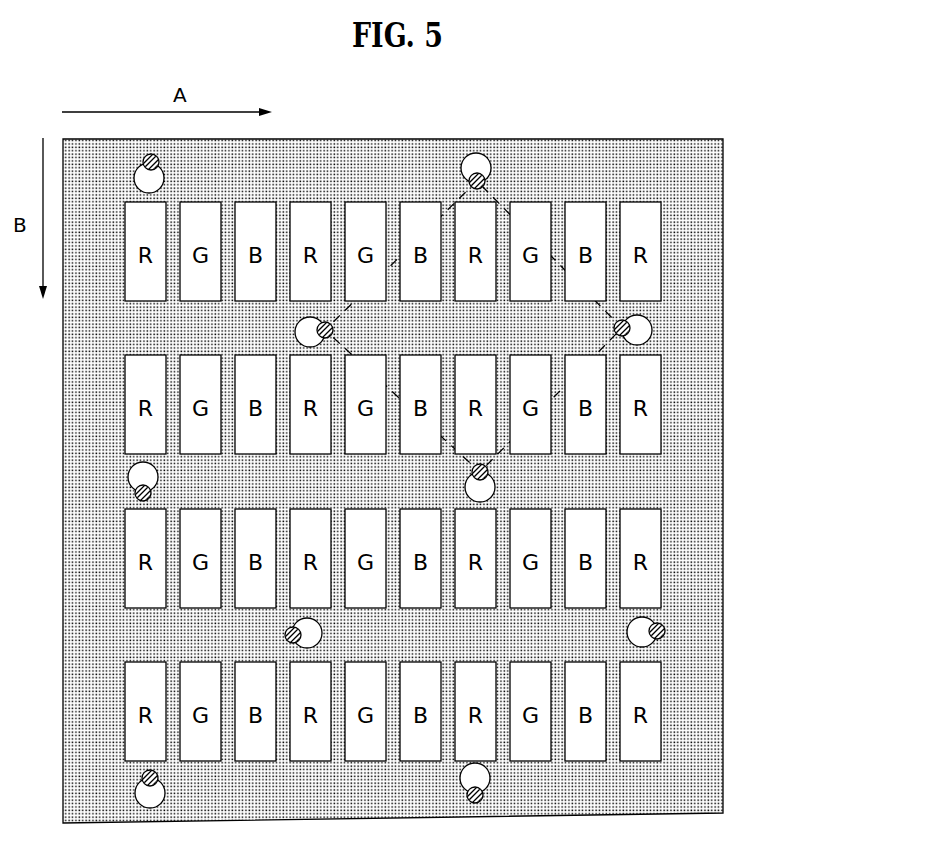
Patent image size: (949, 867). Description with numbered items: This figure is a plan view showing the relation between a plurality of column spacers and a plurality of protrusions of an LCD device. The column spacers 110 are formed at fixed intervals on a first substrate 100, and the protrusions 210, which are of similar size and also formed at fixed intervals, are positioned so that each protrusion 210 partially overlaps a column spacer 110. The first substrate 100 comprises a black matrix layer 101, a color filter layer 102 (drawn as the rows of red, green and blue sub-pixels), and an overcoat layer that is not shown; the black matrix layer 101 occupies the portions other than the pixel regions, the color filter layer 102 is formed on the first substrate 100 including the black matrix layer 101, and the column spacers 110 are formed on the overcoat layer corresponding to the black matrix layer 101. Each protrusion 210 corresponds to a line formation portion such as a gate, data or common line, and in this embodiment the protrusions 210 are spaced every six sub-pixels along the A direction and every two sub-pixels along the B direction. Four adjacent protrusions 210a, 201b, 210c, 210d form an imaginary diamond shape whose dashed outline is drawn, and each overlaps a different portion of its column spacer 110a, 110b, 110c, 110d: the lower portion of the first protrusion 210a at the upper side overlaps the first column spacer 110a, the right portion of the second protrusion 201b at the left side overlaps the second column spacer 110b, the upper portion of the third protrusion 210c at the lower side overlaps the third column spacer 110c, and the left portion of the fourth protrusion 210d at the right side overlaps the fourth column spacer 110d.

The first substrate 100 is at (724, 762).
The black matrix layer 101 is at (700, 642).
The color filter layer 102 is at (308, 761).
The column spacers 110 is at (872, 198).
The first column spacer 110a is at (485, 183).
The second column spacer 110b is at (333, 335).
The third column spacer 110c is at (488, 470).
The fourth column spacer 110d is at (629, 324).
The protrusions 210 is at (345, 75).
The first protrusion 210a is at (477, 153).
The second protrusion 201b is at (318, 320).
The third protrusion 210c is at (476, 466).
The fourth protrusion 210d is at (636, 315).